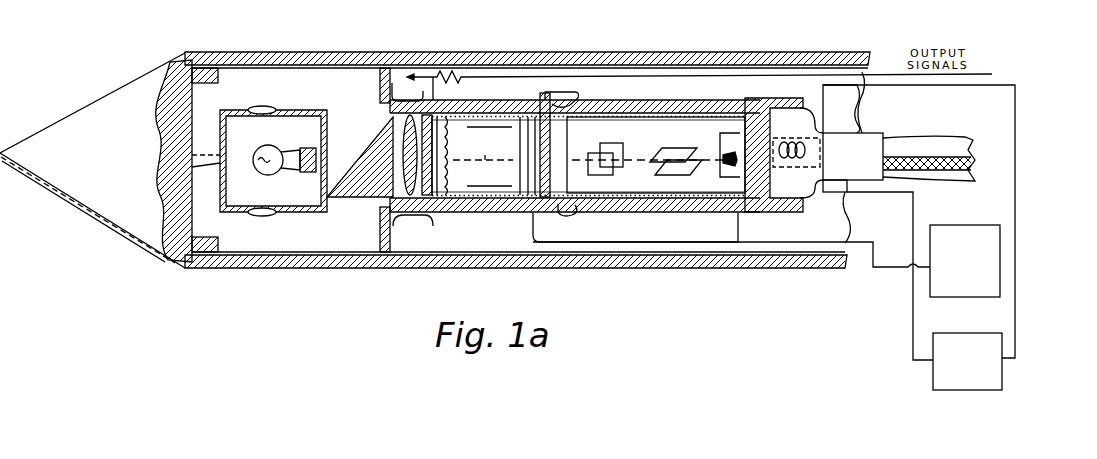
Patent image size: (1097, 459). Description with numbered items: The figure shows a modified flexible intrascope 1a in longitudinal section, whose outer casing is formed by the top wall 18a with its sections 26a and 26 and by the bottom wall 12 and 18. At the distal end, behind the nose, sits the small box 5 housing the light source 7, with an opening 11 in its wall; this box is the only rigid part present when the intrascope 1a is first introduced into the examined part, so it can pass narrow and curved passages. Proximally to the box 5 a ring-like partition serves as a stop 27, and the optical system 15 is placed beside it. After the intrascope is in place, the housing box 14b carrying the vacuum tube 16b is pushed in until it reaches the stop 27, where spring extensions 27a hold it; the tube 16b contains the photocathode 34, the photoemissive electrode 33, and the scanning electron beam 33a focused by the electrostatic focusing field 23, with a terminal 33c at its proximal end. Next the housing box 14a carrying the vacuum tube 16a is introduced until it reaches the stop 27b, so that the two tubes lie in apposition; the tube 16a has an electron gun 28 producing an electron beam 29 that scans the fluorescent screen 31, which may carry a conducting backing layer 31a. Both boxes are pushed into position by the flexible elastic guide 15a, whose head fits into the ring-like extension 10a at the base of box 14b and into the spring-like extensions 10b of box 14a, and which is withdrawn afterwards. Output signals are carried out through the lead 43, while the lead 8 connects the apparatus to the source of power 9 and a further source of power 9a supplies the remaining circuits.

The flexible intrascope 1a is at (205, 52).
The outer casing top wall 18a is at (357, 52).
The casing section 26a is at (675, 52).
The casing section 26 is at (762, 64).
The bottom wall 12 is at (273, 268).
The outer casing bottom wall 18 is at (356, 268).
The box 5 is at (313, 110).
The lamp housing opening 11 is at (264, 212).
The light source 7 is at (262, 150).
The optical system 15 is at (378, 125).
The stop 27 is at (382, 84).
The output lead 43 is at (713, 75).
The housing box 14b is at (483, 100).
The housing box 14a is at (610, 98).
The vacuum tube 16b is at (490, 202).
The vacuum tube 16a is at (670, 183).
The photocathode 34 is at (438, 200).
The photoemissive electrode 33 is at (527, 127).
The scanning electron beam 33a is at (483, 143).
The electrostatic focusing field 23 is at (470, 172).
The terminal 33c is at (545, 100).
The spring extensions 27a is at (567, 223).
The stop 27b is at (530, 212).
The ring-like extension 10a is at (560, 213).
The electron gun 28 is at (735, 138).
The fluorescent screen 31 is at (566, 143).
The conducting backing layer 31a is at (620, 144).
The electron beam 29 is at (640, 157).
The spring-like extensions 10b is at (773, 213).
The flexible elastic guide 15a is at (867, 133).
The lead 8 is at (856, 242).
The source of power 9 is at (948, 300).
The source of power 9a is at (1002, 373).